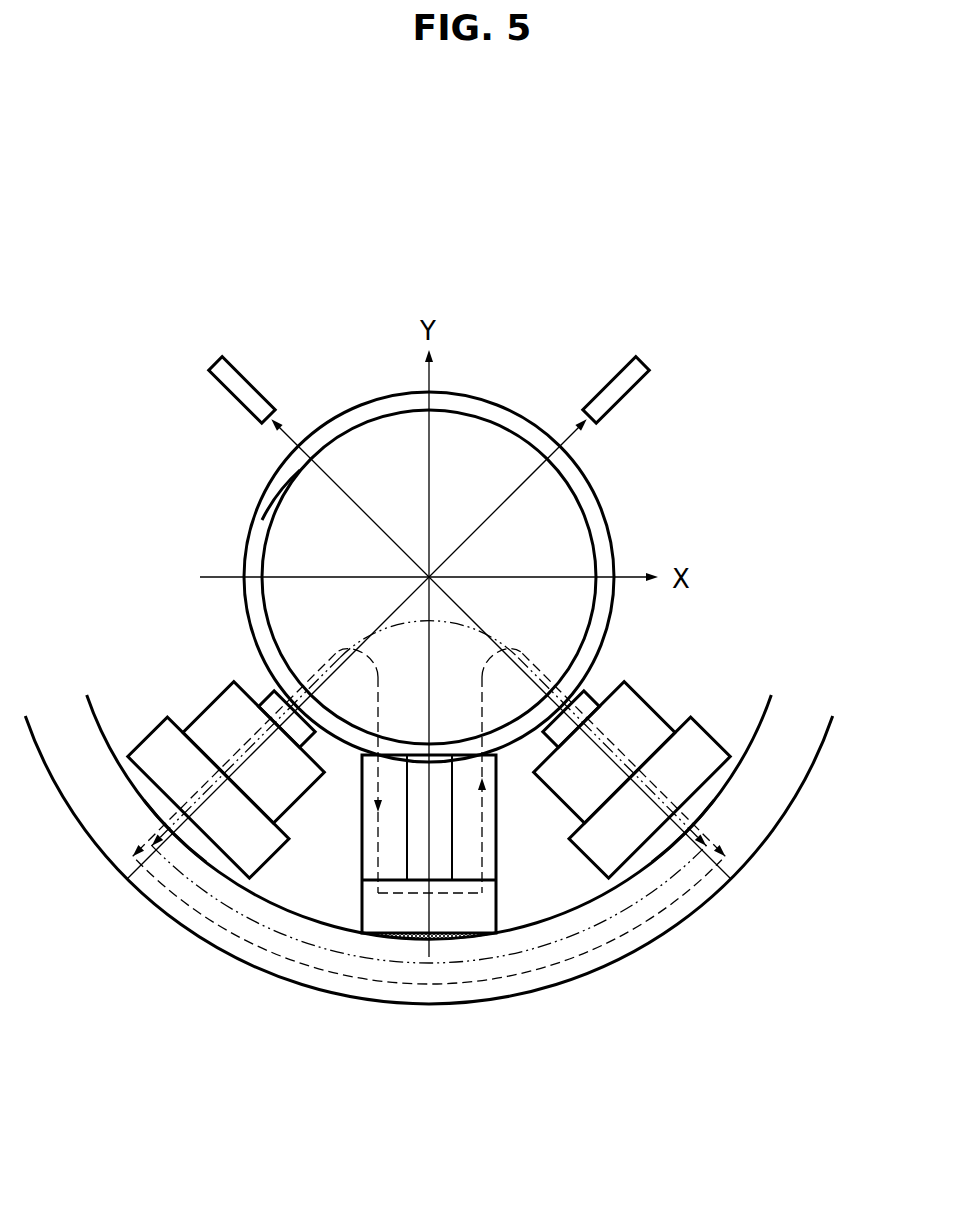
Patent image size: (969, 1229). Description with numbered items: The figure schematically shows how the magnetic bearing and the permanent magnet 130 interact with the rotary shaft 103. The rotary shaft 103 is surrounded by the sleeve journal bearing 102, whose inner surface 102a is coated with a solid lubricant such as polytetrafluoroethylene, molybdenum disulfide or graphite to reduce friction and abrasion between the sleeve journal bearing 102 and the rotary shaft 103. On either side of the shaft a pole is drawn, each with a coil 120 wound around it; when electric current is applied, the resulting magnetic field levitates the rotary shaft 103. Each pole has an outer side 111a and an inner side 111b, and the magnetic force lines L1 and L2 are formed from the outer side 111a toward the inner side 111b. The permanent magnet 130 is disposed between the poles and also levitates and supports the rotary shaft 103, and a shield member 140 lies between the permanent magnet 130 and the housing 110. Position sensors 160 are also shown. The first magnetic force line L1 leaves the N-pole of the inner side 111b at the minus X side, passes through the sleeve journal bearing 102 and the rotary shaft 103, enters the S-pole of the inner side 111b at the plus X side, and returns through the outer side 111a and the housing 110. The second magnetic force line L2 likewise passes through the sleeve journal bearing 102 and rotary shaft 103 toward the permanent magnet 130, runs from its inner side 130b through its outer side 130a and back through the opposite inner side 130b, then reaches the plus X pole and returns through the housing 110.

The sleeve journal bearing 102 is at (583, 481).
The inner surface of the sleeve journal bearing 102a is at (275, 525).
The rotary shaft 103 is at (572, 540).
The housing 110 is at (808, 747).
The outer side of the pole 111a is at (698, 817).
The inner side of the pole 111b is at (262, 690).
The coil 120 is at (164, 735).
The permanent magnet 130 is at (421, 892).
The outer side of the permanent magnet 130a is at (372, 912).
The inner side of the permanent magnet 130b is at (368, 780).
The shield member 140 is at (468, 945).
The position sensor 160 is at (227, 380).
The first magnetic force line L1 is at (645, 898).
The second magnetic force line L2 is at (613, 940).